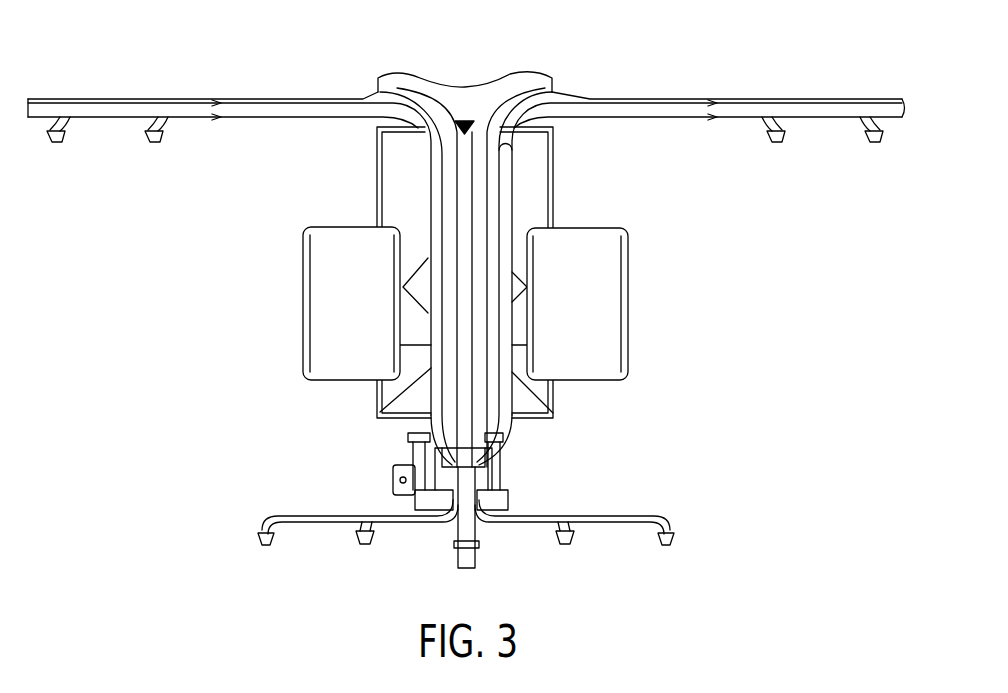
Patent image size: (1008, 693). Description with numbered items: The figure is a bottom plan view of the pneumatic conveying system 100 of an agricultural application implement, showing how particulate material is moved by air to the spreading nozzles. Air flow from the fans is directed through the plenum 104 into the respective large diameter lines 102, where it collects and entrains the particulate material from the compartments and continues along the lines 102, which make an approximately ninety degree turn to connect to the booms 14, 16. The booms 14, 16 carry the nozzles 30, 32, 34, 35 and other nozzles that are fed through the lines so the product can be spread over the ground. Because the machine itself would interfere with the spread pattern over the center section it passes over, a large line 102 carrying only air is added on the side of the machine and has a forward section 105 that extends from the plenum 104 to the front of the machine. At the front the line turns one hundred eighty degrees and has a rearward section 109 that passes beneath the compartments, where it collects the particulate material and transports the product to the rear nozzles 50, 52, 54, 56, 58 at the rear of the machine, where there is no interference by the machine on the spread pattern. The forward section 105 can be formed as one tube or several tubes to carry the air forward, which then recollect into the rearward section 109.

The boom 14 is at (676, 93).
The boom 16 is at (344, 93).
The nozzle 30 is at (872, 143).
The nozzle 32 is at (773, 143).
The nozzle 34 is at (156, 143).
The nozzle 35 is at (58, 143).
The rear nozzle 50 is at (665, 548).
The rear nozzle 52 is at (563, 548).
The rear nozzle 54 is at (457, 556).
The rear nozzle 56 is at (365, 548).
The rear nozzle 58 is at (263, 548).
The pneumatic conveying system 100 is at (373, 417).
The large diameter line 102 is at (452, 223).
The plenum 104 is at (500, 486).
The forward section 105 is at (527, 302).
The rearward section 109 is at (467, 415).